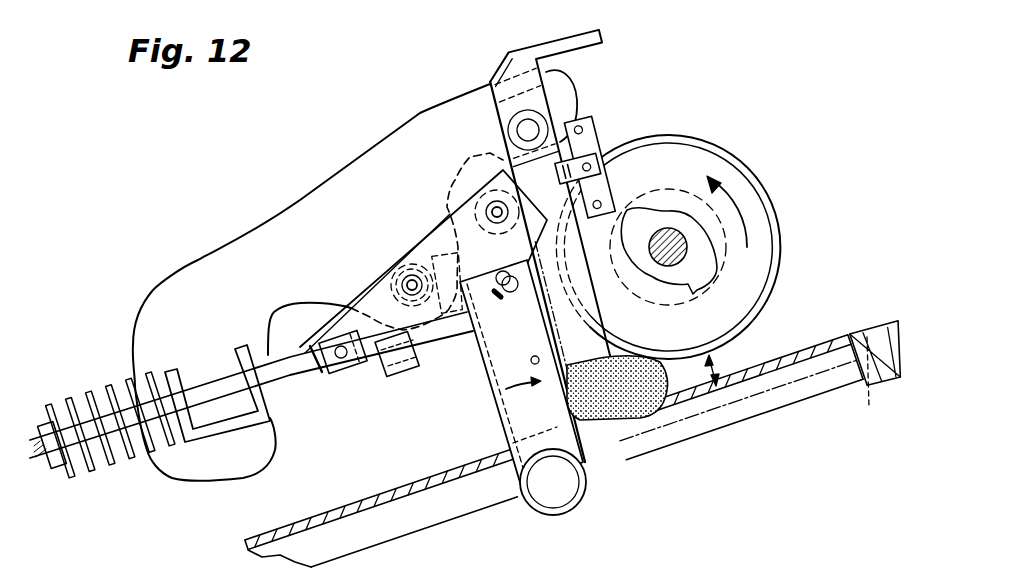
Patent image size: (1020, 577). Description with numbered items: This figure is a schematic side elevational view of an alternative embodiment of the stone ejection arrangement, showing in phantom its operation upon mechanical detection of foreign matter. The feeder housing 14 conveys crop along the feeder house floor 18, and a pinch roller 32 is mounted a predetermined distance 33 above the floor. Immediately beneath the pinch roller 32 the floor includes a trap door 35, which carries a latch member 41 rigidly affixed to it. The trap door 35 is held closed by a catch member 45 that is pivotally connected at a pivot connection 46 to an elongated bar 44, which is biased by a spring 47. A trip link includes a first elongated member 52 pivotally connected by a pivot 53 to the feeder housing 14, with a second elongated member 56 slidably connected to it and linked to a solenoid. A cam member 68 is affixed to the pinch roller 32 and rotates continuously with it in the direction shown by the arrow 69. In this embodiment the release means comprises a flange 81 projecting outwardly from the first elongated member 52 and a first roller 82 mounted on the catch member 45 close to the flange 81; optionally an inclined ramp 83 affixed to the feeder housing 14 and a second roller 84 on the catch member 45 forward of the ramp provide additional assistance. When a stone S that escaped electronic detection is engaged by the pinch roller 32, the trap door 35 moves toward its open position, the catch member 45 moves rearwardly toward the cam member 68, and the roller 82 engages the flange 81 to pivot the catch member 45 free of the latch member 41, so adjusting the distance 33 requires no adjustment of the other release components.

The feeder housing 14 is at (347, 166).
The feeder house floor 18 is at (373, 490).
The pinch roller 32 is at (780, 264).
The predetermined distance 33 is at (722, 362).
The trap door 35 is at (787, 403).
The latch member 41 is at (492, 398).
The elongated bar 44 is at (192, 372).
The catch member 45 is at (362, 293).
The pivot connection 46 is at (344, 375).
The spring 47 is at (98, 390).
The first elongated member 52 is at (600, 322).
The pivot 53 is at (517, 128).
The second elongated member 56 is at (598, 130).
The cam member 68 is at (694, 298).
The arrow 69 is at (762, 198).
The flange 81 is at (566, 178).
The first roller 82 is at (452, 206).
The inclined ramp 83 is at (418, 363).
The second roller 84 is at (398, 256).
The stone S is at (664, 376).